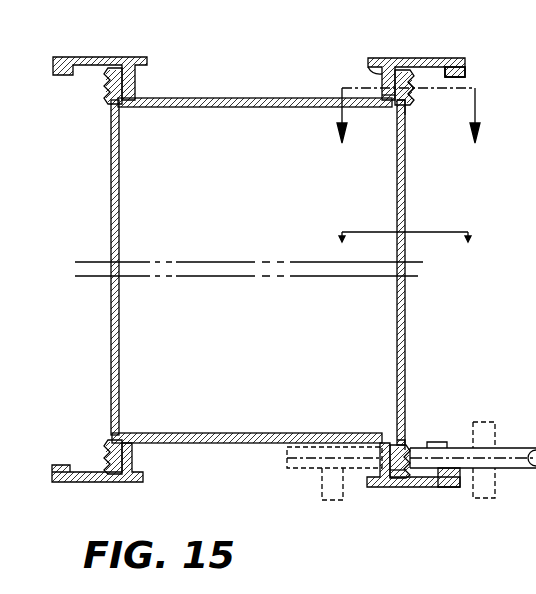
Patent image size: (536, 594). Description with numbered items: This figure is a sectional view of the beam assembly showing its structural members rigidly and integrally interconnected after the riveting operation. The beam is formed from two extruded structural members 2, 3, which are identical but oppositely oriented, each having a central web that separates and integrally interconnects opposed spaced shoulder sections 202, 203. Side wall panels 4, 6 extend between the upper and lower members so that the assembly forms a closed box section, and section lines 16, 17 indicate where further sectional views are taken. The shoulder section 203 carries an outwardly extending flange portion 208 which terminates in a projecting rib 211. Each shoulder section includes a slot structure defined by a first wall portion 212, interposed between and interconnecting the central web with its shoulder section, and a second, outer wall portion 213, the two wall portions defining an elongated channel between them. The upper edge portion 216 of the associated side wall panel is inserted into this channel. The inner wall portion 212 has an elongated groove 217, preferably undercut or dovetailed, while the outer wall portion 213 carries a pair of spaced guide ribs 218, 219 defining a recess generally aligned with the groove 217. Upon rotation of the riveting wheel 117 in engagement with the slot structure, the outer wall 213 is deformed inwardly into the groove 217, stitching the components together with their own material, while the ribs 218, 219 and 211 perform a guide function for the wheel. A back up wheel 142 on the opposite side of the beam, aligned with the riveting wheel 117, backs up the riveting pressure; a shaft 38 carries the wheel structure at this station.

The extruded structural member 2 is at (237, 98).
The extruded structural member 3 is at (237, 432).
The left side wall 4 is at (110, 205).
The right side wall 6 is at (406, 232).
The section line 16- 16 is at (408, 128).
The section line 17- 17 is at (405, 248).
The shaft 38 is at (496, 442).
The riveting wheel 117 is at (450, 444).
The back up wheel 142 is at (318, 458).
The shoulder section 202 is at (103, 57).
The shoulder section 203 is at (427, 37).
The flange portion 208 is at (452, 62).
The projecting rib 211 is at (466, 78).
The first wall portion 212 is at (377, 72).
The second wall portion 213 is at (412, 95).
The upper edge portion 216 is at (393, 102).
The elongated groove 217 is at (404, 112).
The guide rib 218 is at (402, 483).
The guide rib 219 is at (406, 447).